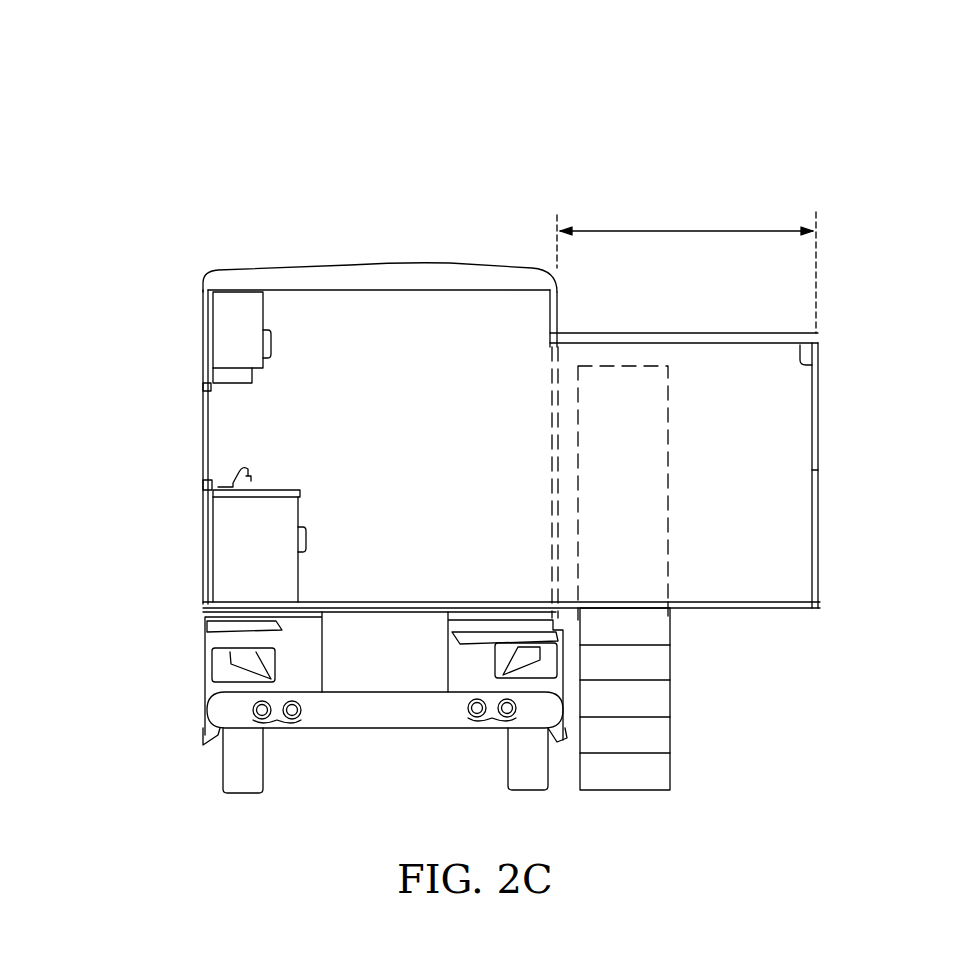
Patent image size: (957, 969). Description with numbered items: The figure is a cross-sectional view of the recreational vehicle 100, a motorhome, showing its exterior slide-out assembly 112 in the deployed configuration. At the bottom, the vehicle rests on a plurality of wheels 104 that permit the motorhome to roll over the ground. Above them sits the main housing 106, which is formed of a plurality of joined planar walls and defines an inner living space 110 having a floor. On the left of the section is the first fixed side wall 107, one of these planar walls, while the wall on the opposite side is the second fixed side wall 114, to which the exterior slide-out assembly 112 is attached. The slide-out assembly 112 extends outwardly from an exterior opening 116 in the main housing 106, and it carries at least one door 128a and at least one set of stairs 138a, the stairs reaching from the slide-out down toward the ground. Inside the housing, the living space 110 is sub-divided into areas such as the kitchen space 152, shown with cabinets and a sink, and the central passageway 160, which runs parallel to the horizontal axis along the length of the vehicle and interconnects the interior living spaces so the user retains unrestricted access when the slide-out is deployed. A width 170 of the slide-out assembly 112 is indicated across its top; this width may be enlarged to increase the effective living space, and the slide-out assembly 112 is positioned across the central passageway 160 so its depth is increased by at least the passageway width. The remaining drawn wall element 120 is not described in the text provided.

The recreational vehicle 100 is at (803, 114).
The wheels 104 is at (263, 775).
The main housing 106 is at (299, 262).
The first fixed side wall 107 is at (200, 322).
The inner living space 110 is at (409, 311).
The exterior slide-out assembly 112 is at (675, 331).
The second fixed side wall 114 is at (560, 318).
The exterior opening 116 is at (527, 410).
The slide-out end wall 120 is at (822, 547).
The door 128a is at (640, 465).
The set of stairs 138a is at (678, 733).
The kitchen space 152 is at (286, 428).
The central passageway 160 is at (374, 532).
The width of the slide-out assembly 170 is at (697, 228).